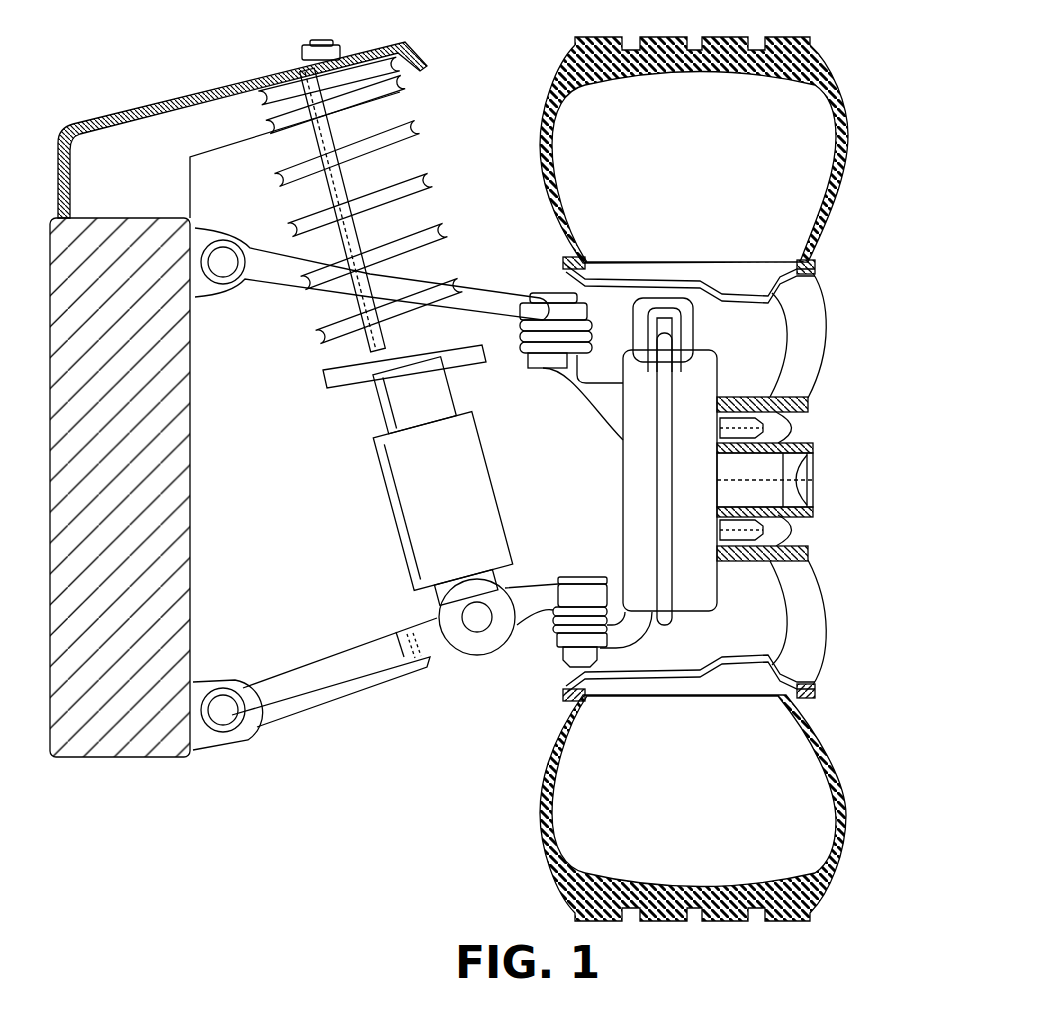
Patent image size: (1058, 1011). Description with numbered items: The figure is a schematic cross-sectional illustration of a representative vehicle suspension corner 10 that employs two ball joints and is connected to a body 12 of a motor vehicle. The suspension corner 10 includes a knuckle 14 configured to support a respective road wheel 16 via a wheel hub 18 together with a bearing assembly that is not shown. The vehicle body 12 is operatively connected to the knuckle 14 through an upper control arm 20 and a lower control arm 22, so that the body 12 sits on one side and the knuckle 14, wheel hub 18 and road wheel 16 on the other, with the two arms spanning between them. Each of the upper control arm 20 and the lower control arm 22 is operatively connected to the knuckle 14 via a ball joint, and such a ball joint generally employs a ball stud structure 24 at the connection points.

The suspension corner 10 is at (478, 188).
The body 12 is at (135, 467).
The knuckle 14 is at (697, 397).
The road wheel 16 is at (806, 345).
The wheel hub 18 is at (813, 512).
The upper control arm 20 is at (283, 300).
The lower control arm 22 is at (322, 682).
The ball stud structure 24 is at (512, 367).